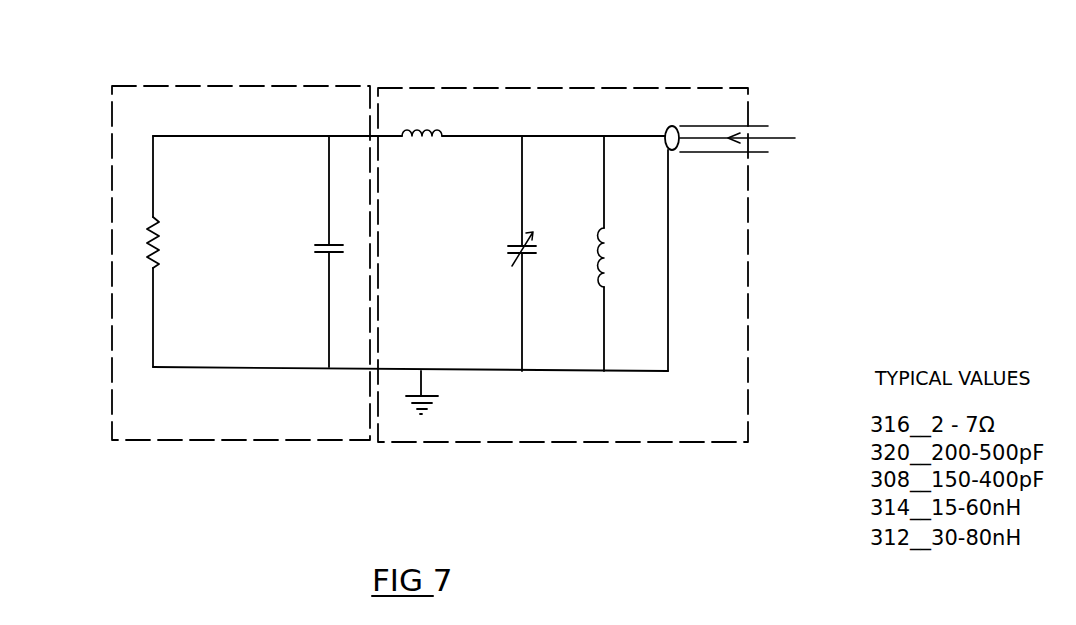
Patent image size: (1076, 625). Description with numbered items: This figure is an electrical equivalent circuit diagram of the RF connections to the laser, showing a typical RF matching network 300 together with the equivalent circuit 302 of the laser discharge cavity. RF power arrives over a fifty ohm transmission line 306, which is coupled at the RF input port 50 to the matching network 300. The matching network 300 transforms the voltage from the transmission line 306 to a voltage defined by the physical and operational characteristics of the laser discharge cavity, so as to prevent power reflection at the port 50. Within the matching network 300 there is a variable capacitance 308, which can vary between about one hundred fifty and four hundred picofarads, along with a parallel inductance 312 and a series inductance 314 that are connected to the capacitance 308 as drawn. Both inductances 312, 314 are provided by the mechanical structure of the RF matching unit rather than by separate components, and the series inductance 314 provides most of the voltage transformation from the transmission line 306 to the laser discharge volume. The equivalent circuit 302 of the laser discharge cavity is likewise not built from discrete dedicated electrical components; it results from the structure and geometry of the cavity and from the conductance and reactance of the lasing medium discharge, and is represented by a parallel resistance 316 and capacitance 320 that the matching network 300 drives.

The RF matching network 300 is at (746, 428).
The equivalent circuit 302 is at (178, 86).
The transmission line 306 is at (745, 124).
The variable capacitance 308 is at (519, 243).
The parallel inductance 312 is at (612, 240).
The series inductance 314 is at (428, 128).
The parallel resistance 316 is at (150, 228).
The capacitance 320 is at (328, 256).
The RF input port 50 is at (676, 132).